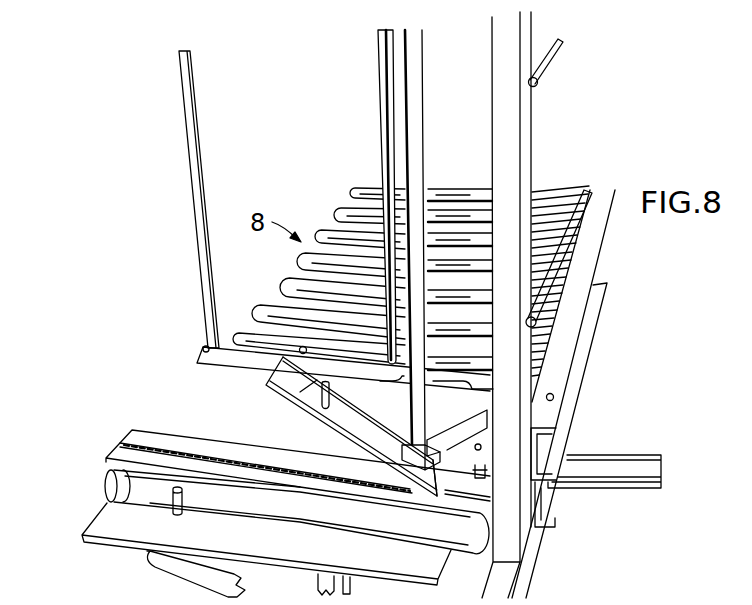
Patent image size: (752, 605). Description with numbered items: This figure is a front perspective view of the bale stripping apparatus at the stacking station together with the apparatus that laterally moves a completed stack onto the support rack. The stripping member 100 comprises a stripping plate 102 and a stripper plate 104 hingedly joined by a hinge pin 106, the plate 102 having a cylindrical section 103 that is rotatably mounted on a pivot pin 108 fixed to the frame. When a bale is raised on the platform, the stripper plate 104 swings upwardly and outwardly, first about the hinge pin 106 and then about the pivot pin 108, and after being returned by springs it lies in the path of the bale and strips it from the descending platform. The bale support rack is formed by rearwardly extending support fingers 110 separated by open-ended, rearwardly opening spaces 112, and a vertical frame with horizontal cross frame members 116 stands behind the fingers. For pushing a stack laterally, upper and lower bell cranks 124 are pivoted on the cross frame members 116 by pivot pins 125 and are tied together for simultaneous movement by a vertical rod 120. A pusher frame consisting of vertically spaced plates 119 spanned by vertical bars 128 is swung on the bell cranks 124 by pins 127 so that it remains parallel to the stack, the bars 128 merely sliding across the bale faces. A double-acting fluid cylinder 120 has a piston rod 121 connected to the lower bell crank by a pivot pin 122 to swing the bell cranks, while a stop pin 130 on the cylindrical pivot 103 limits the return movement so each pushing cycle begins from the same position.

The stripping member 100 is at (78, 511).
The stripping plate 102 is at (124, 456).
The cylindrical section 103 is at (275, 507).
The stripper plate 104 is at (197, 364).
The hinge pin 106 is at (165, 437).
The pivot pin 108 is at (105, 481).
The support finger 110 is at (372, 192).
The space 112 is at (331, 226).
The horizontal cross frame member 116 is at (539, 70).
The plate 119 is at (358, 432).
The vertical rod 120 is at (417, 95).
The piston rod 121 is at (487, 473).
The pivot pin 122 is at (479, 440).
The bell crank 124 is at (280, 366).
The pivot pin 125 is at (556, 396).
The pin 127 is at (302, 346).
The vertical bar 128 is at (193, 228).
The stop pin 130 is at (172, 506).